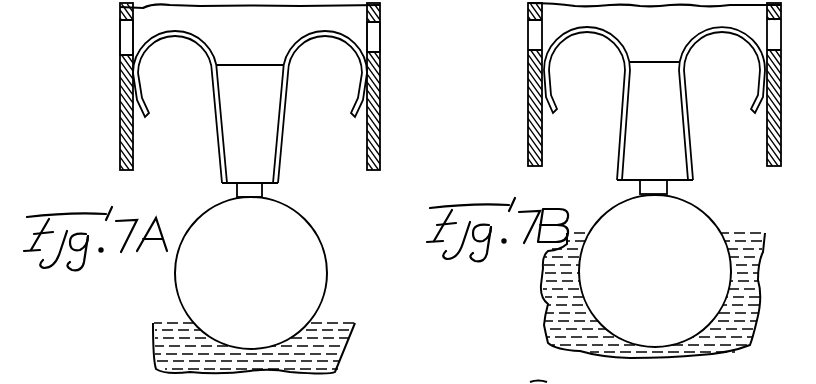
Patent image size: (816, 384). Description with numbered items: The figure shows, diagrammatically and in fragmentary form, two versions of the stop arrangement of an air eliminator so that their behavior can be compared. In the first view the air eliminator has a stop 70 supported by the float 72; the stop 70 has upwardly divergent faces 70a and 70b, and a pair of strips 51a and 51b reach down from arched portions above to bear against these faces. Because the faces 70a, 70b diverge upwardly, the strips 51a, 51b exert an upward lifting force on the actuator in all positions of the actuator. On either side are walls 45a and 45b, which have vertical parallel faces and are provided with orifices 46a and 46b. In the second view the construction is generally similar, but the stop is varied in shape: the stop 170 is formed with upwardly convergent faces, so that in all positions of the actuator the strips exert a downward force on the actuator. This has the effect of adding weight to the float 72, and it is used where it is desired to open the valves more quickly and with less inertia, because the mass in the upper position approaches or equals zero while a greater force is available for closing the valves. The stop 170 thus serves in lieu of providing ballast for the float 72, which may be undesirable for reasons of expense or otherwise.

In FIG. 7A, the wall 45a is at (127, 138).
In FIG. 7A, the orifice 46a is at (128, 43).
In FIG. 7A, the wall 45b is at (382, 128).
In FIG. 7A, the orifice 46b is at (382, 40).
In FIG. 7A, the strip 51a is at (195, 33).
In FIG. 7A, the strip 51b is at (312, 35).
In FIG. 7A, the stop 70 is at (253, 131).
In FIG. 7A, the upwardly divergent face 70a is at (218, 124).
In FIG. 7A, the upwardly divergent face 70b is at (283, 105).
In FIG. 7A, the float 72 is at (251, 273).
In FIG. 7B, the stop 170 is at (668, 138).